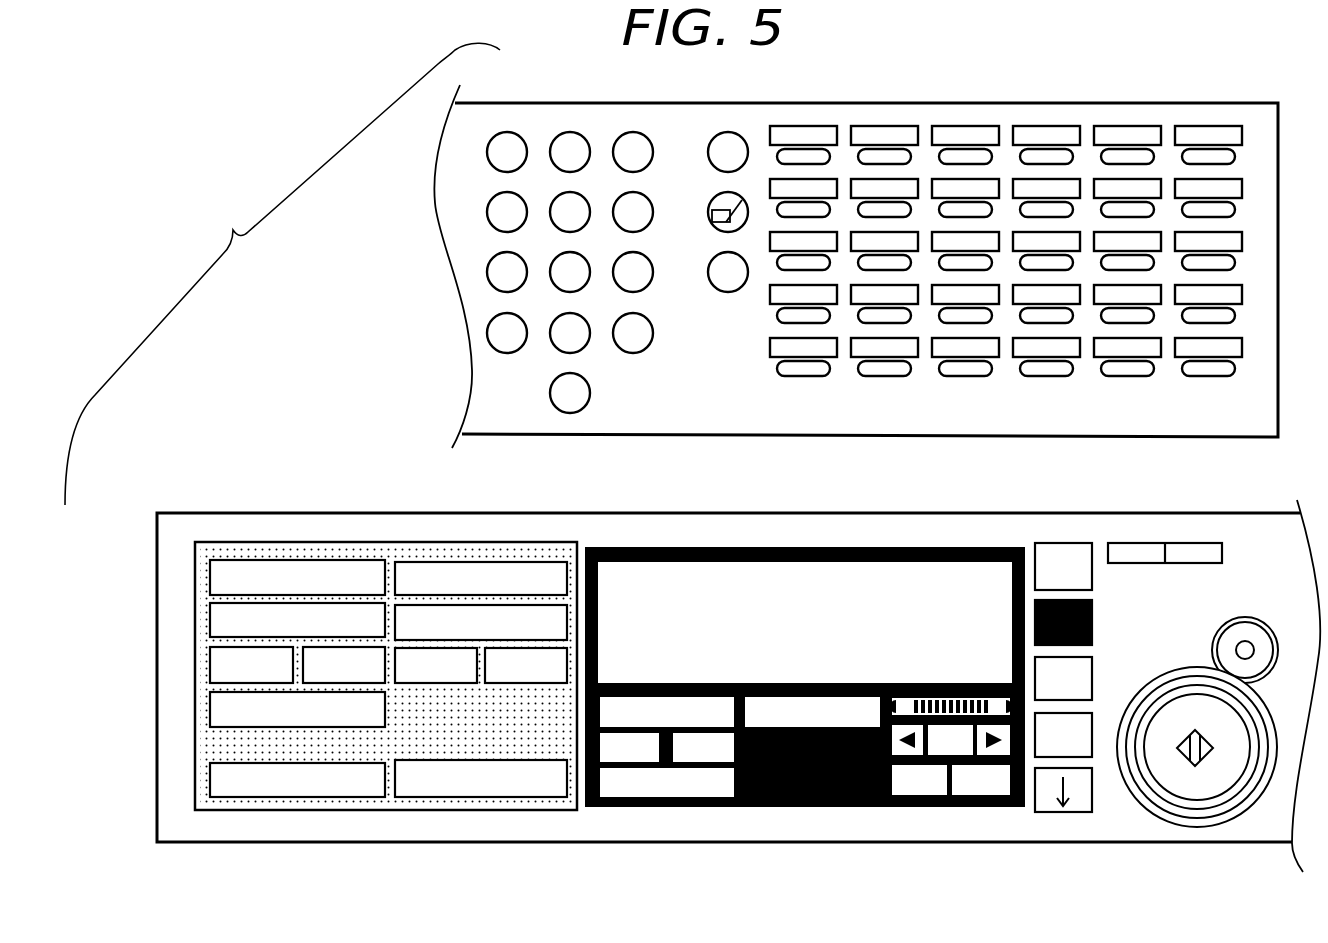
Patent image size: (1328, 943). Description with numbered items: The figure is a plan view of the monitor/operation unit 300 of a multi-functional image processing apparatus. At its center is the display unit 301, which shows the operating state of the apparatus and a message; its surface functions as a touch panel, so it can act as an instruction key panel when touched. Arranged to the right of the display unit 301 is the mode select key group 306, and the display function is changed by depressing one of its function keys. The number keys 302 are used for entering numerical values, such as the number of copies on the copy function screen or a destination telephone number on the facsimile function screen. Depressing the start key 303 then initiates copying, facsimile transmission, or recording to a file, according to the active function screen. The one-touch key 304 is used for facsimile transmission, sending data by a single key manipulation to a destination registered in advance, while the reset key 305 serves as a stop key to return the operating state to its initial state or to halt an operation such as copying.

The monitor/operation unit 300 is at (370, 513).
The display unit 301 is at (922, 546).
The number keys 302 is at (480, 98).
The start key 303 is at (1183, 827).
The one-touch key 304 is at (1256, 382).
The reset key 305 is at (1202, 550).
The mode select key group 306 is at (1100, 814).